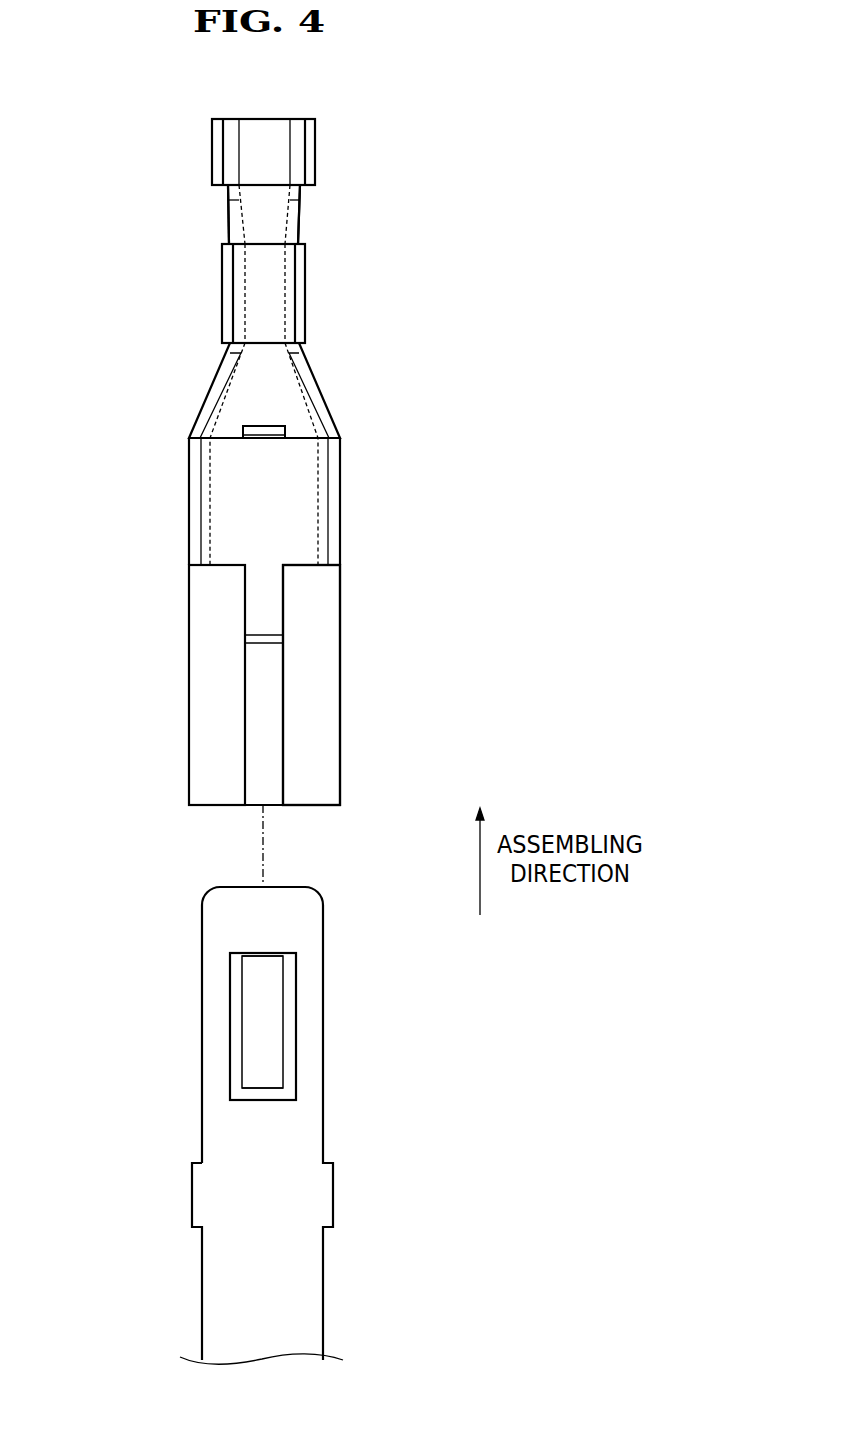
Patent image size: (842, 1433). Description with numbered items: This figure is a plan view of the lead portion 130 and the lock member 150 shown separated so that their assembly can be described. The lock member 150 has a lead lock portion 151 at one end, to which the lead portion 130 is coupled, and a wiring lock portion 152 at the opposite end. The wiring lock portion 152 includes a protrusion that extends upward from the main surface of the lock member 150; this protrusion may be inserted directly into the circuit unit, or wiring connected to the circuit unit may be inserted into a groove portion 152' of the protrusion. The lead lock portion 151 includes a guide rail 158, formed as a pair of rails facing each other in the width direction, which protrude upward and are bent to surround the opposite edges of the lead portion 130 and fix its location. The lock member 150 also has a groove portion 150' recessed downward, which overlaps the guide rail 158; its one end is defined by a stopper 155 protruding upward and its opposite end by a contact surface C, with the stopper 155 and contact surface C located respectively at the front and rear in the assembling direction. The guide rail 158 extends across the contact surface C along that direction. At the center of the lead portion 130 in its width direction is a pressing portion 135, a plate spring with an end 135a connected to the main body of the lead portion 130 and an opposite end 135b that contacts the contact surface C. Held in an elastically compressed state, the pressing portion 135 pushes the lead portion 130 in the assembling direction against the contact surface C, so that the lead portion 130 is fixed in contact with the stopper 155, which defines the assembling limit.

The wiring lock portion 152 is at (183, 231).
The groove portion of the protrusion 152' is at (319, 214).
The lock member 150 is at (353, 457).
The groove portion 150' is at (315, 454).
The stopper 155 is at (267, 428).
The lead lock portion 151 is at (233, 685).
The contact surface C is at (265, 642).
The guide rail 158 is at (325, 740).
The lead portion 130 is at (301, 1125).
The pressing portion 135 is at (244, 1028).
The end 135a is at (247, 963).
The opposite end 135b is at (255, 1083).